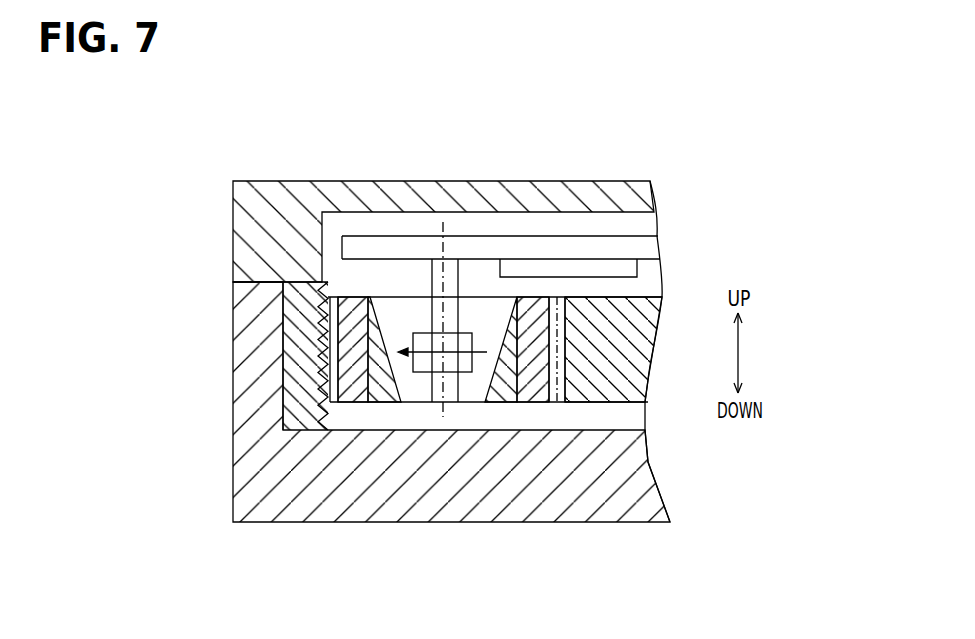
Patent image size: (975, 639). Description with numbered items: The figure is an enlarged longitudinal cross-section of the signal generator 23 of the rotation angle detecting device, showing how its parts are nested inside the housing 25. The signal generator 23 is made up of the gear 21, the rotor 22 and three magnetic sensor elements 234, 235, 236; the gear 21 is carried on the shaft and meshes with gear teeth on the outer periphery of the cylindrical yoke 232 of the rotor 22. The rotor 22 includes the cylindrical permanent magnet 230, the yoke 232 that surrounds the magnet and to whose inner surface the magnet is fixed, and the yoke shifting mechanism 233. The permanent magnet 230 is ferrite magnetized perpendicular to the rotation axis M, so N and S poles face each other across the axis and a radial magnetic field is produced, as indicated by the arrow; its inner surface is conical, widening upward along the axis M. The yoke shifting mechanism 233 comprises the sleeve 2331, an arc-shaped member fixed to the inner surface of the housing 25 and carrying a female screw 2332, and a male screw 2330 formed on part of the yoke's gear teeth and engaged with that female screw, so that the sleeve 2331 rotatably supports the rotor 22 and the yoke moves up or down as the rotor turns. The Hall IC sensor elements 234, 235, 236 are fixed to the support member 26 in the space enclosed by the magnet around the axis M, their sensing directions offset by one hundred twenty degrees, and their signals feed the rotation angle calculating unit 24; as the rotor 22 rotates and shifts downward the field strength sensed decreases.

The gear 21 is at (633, 318).
The rotor 22 is at (540, 403).
The signal generator 23 is at (390, 305).
The permanent magnet 230 is at (502, 318).
The cylindrical yoke 232 is at (327, 432).
The yoke shifting mechanism 233 is at (292, 330).
The male screw 2330 is at (310, 388).
The sleeve 2331 is at (304, 376).
The female screw 2332 is at (318, 345).
The magnetic sensor element 234 is at (435, 400).
The magnetic sensor element 235 is at (472, 372).
The magnetic sensor element 236 is at (420, 372).
The rotation angle calculating unit 24 is at (593, 270).
The housing 25 is at (632, 475).
The support member 26 is at (455, 277).
The rotation axis M is at (443, 244).